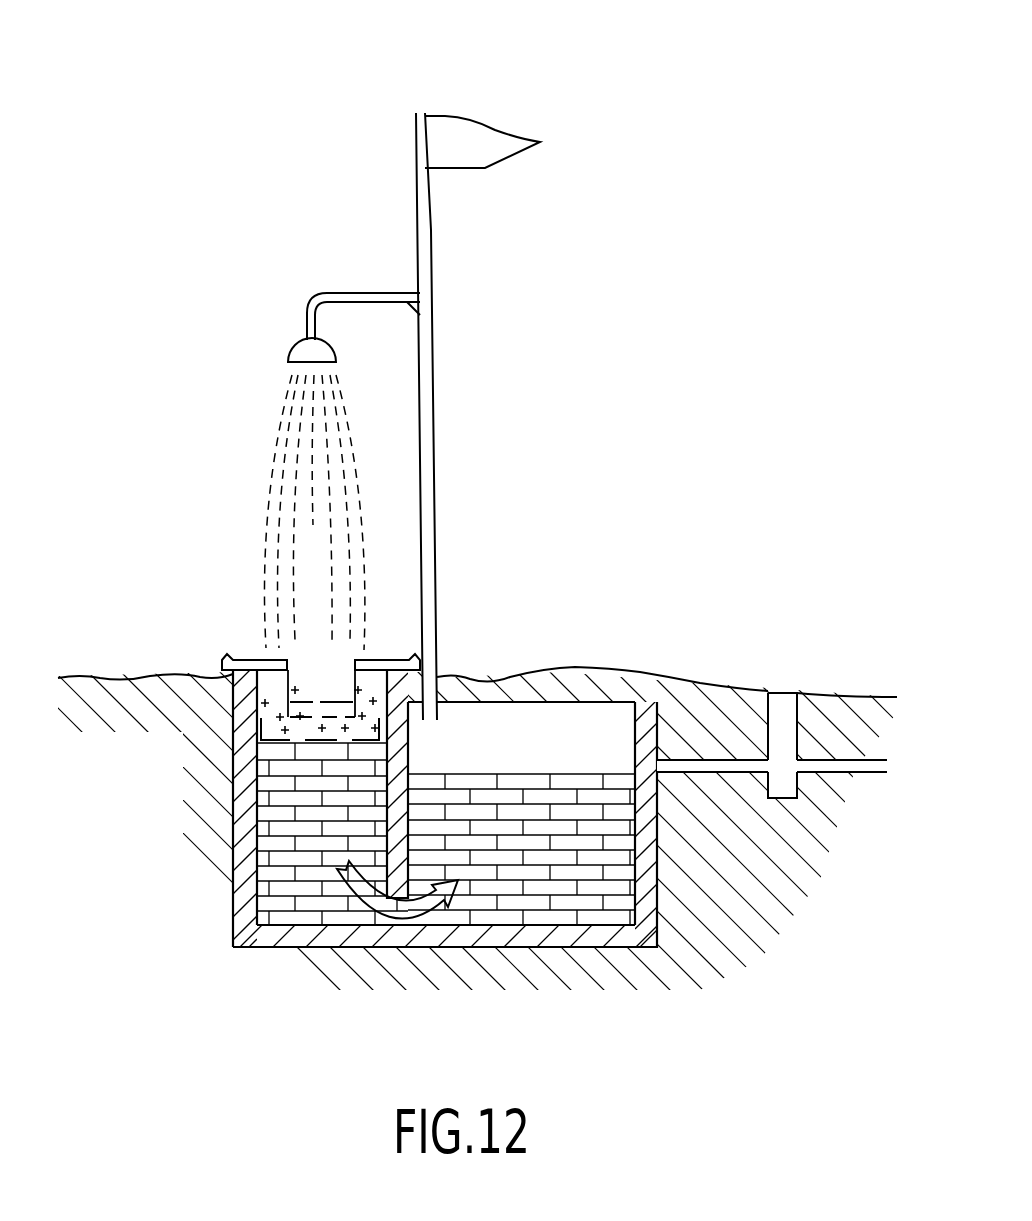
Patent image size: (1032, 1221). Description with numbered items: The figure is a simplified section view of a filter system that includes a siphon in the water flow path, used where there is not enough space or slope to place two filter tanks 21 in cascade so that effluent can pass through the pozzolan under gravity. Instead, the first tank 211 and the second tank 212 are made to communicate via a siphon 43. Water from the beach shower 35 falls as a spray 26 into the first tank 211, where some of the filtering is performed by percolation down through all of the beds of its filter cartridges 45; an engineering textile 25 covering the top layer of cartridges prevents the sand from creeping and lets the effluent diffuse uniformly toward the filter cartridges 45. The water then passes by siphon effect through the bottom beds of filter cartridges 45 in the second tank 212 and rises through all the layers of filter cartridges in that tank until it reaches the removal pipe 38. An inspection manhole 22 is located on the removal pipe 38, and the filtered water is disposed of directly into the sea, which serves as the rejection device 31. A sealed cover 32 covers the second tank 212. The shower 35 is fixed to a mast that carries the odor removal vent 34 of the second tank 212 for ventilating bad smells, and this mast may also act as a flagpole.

The filter tank 21 is at (447, 806).
The first tank 211 is at (222, 873).
The second tank 212 is at (672, 903).
The inspection manhole 22 is at (783, 676).
The engineering textile 25 is at (372, 683).
The water spray / inflow 26 is at (317, 658).
The rejection device 31 is at (862, 766).
The sealed cover 32 is at (555, 686).
The vent 34 is at (424, 135).
The beach shower 35 is at (358, 268).
The removal pipe 38 is at (737, 768).
The siphon 43 is at (268, 682).
The filter cartridges 45 is at (306, 873).